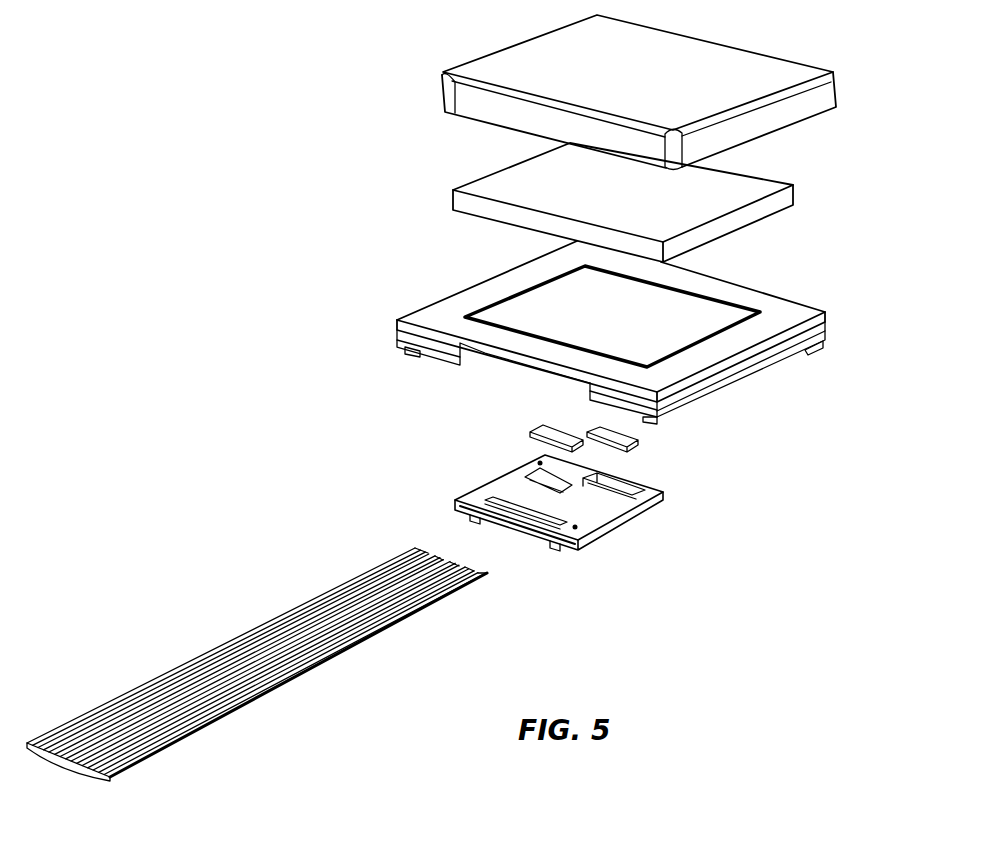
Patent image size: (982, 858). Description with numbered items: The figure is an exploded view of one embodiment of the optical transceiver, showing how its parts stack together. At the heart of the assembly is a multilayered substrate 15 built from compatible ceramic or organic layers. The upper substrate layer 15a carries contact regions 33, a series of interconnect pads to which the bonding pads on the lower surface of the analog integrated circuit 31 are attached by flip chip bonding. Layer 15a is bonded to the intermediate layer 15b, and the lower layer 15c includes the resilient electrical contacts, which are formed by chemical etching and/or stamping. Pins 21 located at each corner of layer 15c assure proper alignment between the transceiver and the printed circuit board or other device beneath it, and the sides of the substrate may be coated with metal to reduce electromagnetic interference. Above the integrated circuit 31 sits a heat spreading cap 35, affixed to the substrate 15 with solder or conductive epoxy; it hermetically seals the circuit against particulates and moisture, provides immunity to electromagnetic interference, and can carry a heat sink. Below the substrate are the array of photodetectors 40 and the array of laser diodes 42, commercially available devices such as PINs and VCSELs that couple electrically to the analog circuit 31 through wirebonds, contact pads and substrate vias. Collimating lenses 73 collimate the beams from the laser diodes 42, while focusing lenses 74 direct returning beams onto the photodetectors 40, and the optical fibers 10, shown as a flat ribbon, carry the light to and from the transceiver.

The optical fibers 10 is at (357, 647).
The multilayered substrate 15 is at (624, 347).
The substrate layer 15a is at (787, 312).
The substrate layer 15b is at (757, 357).
The substrate layer 15c is at (690, 403).
The pins 21 is at (413, 357).
The analog integrated circuit 31 is at (745, 190).
The contact regions 33 is at (707, 293).
The heat spreading cap 35 is at (762, 66).
The array of photodetectors 40 is at (543, 428).
The array of laser diodes 42 is at (610, 446).
The collimating lenses 73 is at (632, 490).
The focusing lenses 74 is at (530, 478).